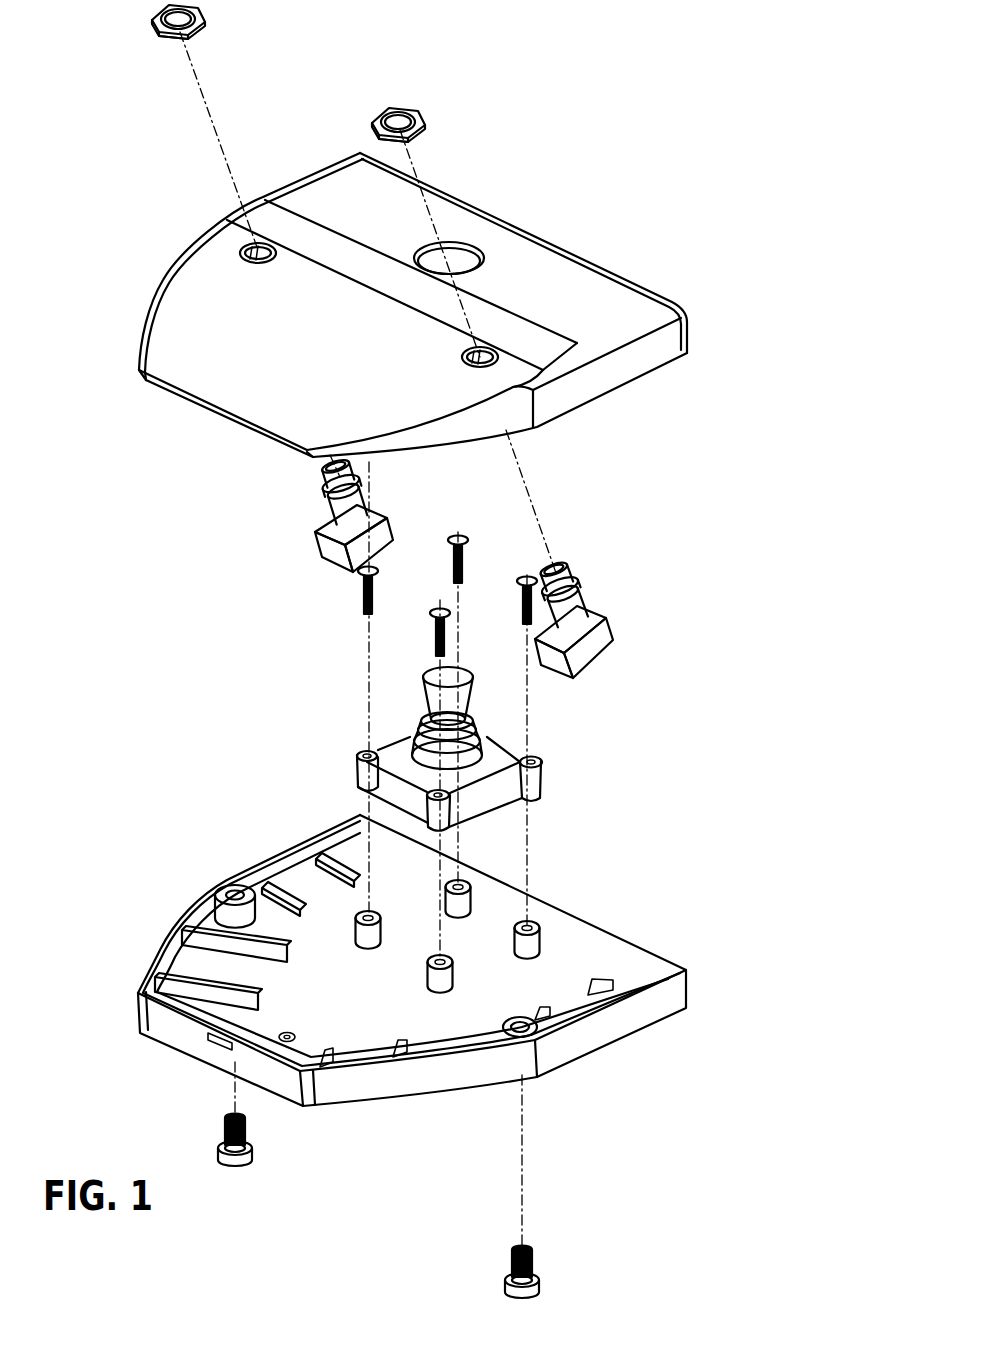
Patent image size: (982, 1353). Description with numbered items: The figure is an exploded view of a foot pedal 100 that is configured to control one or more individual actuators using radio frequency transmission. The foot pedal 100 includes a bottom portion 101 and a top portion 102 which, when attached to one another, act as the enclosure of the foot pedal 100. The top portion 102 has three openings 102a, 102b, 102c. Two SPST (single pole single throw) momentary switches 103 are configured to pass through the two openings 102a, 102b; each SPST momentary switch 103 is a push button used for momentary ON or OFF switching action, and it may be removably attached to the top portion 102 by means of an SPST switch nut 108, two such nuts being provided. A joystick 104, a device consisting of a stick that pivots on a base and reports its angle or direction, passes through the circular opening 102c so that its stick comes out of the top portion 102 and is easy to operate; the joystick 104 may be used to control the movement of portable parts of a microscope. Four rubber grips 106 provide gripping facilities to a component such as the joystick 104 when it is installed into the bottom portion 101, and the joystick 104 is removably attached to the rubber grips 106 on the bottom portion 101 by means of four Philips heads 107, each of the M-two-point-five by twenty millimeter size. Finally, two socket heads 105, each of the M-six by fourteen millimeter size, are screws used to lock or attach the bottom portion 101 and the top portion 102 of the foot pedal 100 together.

The foot pedal 100 is at (672, 140).
The bottom portion 101 is at (148, 963).
The top portion 102 is at (447, 305).
The opening 102a is at (486, 353).
The opening 102b is at (278, 249).
The opening 102c is at (470, 246).
The SPST momentary switch 103 is at (318, 547).
The joystick 104 is at (542, 768).
The socket head 105 is at (243, 1163).
The rubber grip 106 is at (368, 952).
The Philips head 107 is at (468, 533).
The SPST switch nut 108 is at (210, 23).